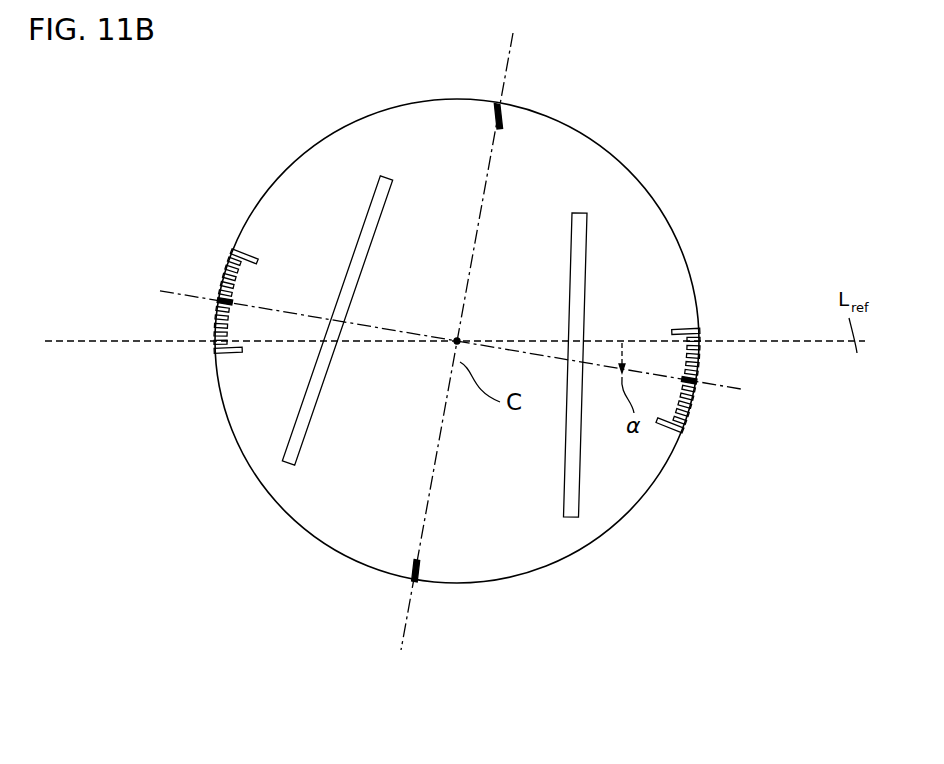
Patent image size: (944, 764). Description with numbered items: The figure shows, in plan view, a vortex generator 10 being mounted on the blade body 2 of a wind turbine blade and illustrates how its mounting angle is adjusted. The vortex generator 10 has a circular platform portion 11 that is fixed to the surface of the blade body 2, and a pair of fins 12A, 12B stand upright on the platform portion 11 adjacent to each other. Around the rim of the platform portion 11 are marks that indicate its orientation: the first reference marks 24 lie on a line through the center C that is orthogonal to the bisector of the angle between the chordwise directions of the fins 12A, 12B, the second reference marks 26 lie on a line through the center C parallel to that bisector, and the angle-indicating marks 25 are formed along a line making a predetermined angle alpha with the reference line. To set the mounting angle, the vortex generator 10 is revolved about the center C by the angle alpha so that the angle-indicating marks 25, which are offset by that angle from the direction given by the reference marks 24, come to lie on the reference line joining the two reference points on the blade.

The blade body 2 is at (802, 169).
The vortex generator 10 is at (670, 120).
The platform portion 11 is at (568, 172).
The fin 12A is at (356, 255).
The fin 12B is at (585, 297).
The reference mark 24 is at (218, 300).
The angle-indicating mark 25 is at (213, 362).
The reference mark 26 is at (493, 128).